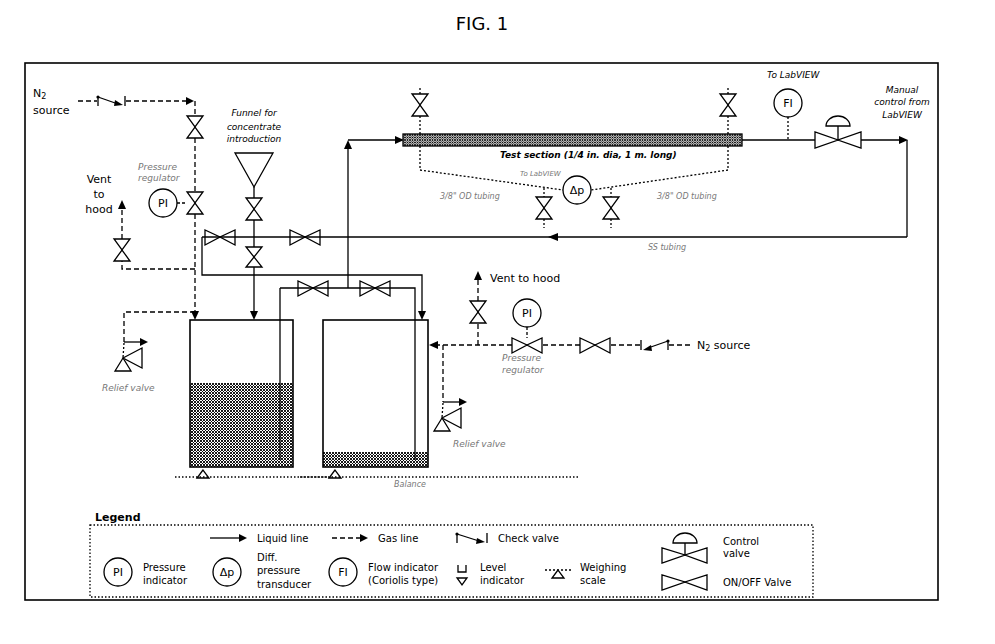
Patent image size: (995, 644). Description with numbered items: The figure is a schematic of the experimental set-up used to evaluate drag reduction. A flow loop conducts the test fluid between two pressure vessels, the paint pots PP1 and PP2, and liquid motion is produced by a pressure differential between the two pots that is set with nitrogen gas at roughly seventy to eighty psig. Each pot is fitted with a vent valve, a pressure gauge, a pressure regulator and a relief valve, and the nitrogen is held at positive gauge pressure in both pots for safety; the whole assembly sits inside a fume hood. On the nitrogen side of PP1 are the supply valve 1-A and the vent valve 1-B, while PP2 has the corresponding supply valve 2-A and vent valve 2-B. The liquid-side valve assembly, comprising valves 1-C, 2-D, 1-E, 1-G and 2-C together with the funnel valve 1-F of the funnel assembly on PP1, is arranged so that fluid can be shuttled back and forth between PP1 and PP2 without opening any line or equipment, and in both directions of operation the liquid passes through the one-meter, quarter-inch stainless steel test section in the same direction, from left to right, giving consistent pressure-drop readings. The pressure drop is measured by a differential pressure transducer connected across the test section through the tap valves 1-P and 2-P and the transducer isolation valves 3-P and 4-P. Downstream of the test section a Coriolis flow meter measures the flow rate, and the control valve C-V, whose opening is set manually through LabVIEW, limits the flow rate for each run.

The nitrogen supply isolation valve (paint pot 1 line) 1-A is at (183, 127).
The vent valve to hood (paint pot 1 line) 1-B is at (111, 249).
The liquid line valve from paint pot 1 branch 1-C is at (305, 230).
The liquid line valve to paint pot 2 loop 2-D is at (220, 230).
The concentrate inlet valve to paint pot 1 1-E is at (265, 257).
The funnel isolation valve 1-F is at (265, 209).
The paint pot 1 outlet valve 1-G is at (313, 296).
The paint pot 2 outlet valve 2-C is at (375, 296).
The upstream pressure tap valve 1-P is at (432, 102).
The downstream pressure tap valve 2-P is at (714, 102).
The differential pressure transducer isolation valve (upstream) 3-P is at (532, 208).
The differential pressure transducer isolation valve (downstream) 4-P is at (624, 208).
The nitrogen supply isolation valve (paint pot 2 line) 2-A is at (595, 337).
The vent valve to hood (paint pot 2 line) 2-B is at (469, 312).
The control valve C-V is at (838, 138).
The paint pot PP1 is at (241, 393).
The paint pot PP2 is at (375, 393).